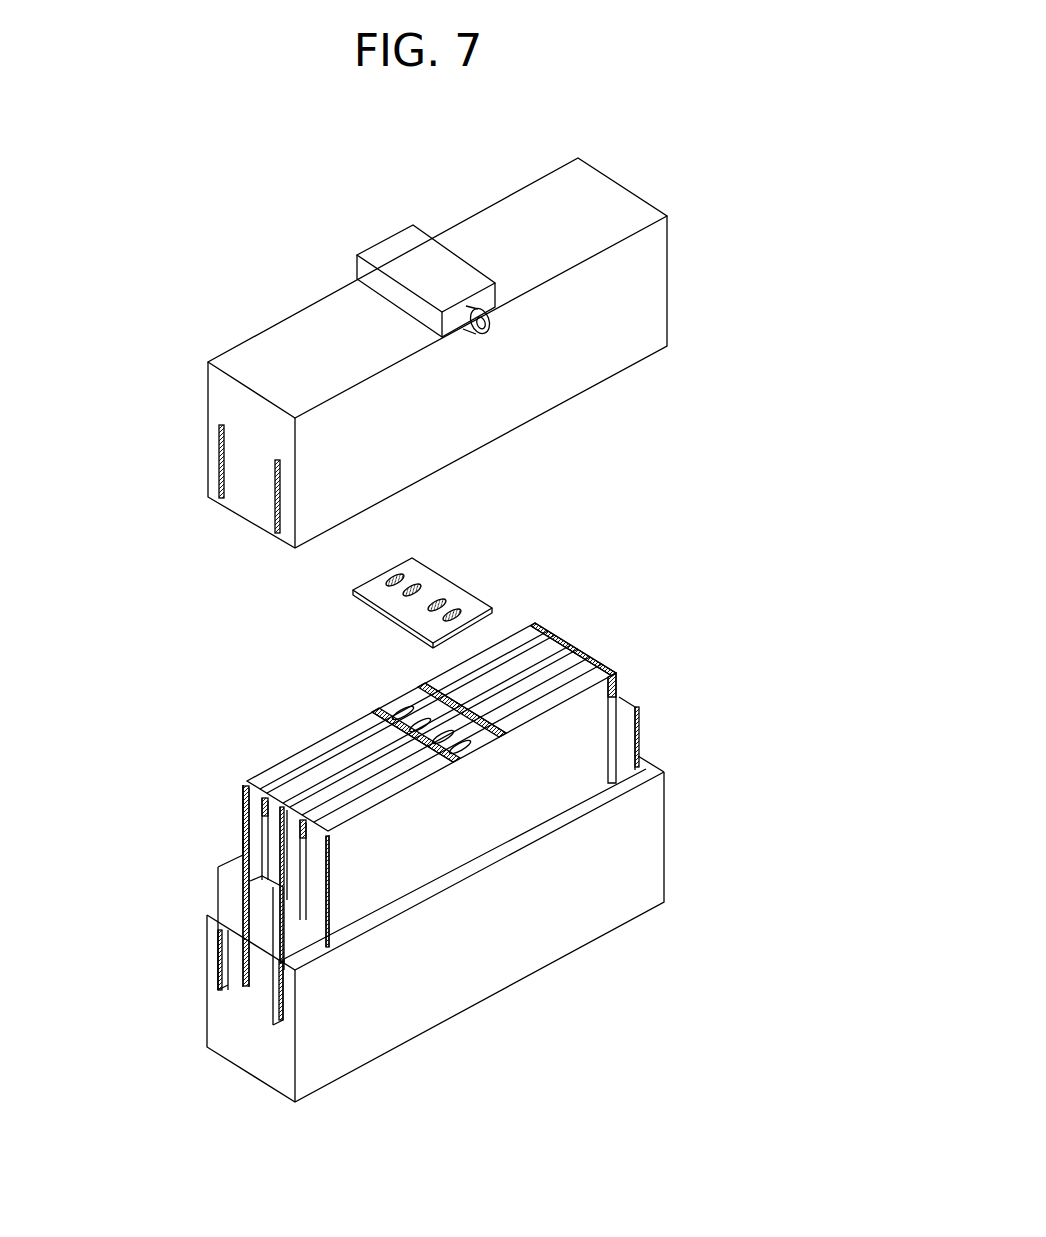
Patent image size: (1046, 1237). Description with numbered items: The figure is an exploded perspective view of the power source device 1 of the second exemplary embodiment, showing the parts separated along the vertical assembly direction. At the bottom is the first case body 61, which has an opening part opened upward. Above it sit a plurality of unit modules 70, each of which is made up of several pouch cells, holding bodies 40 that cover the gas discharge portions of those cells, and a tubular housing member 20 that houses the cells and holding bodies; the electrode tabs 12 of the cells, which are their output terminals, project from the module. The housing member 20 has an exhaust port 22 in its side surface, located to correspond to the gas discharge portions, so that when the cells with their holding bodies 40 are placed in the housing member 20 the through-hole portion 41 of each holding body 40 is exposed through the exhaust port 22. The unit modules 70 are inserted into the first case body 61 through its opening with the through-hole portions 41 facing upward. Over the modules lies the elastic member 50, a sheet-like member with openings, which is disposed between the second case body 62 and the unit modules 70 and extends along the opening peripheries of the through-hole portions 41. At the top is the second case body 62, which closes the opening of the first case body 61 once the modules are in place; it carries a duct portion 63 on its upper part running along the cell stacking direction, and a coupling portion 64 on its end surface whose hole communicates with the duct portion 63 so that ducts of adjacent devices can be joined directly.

The power source device 1 is at (729, 1035).
The electrode tab 12 is at (227, 885).
The housing member 20 is at (238, 795).
The exhaust port 22 is at (387, 672).
The holding body 40 is at (295, 765).
The through-hole portion 41 is at (383, 720).
The elastic member 50 is at (438, 588).
The first case body 61 is at (652, 872).
The second case body 62 is at (655, 285).
The duct portion 63 is at (409, 253).
The coupling portion 64 is at (460, 328).
The unit module 70 is at (584, 599).